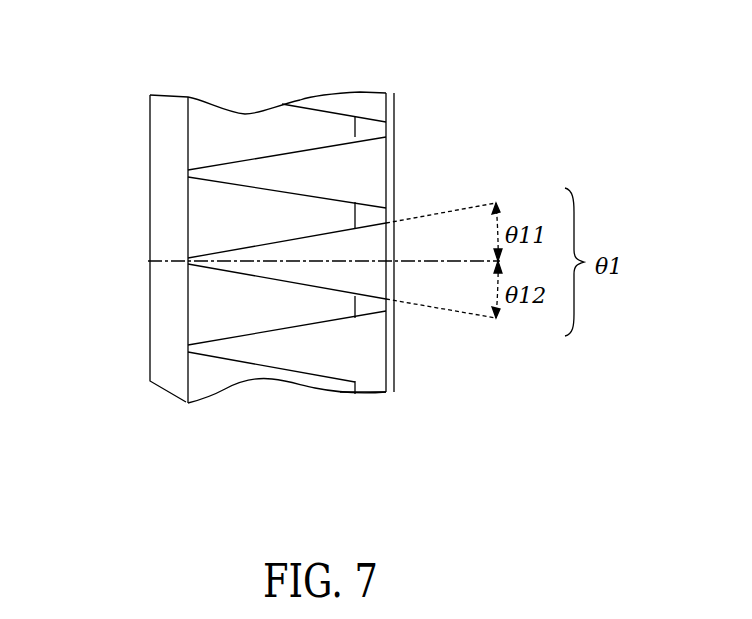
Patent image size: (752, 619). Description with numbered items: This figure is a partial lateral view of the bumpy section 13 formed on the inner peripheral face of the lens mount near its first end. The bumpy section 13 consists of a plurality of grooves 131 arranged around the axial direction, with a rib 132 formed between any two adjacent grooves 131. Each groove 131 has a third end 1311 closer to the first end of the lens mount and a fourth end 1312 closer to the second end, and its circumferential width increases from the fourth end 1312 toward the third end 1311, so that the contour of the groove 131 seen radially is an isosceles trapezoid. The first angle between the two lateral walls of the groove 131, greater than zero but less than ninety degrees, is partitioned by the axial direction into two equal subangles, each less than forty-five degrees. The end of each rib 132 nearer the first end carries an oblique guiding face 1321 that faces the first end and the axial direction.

The bumpy section 13 is at (208, 142).
The groove 131 is at (360, 242).
The third end 1311 is at (360, 362).
The fourth end 1312 is at (208, 352).
The rib 132 is at (246, 215).
The guiding face 1321 is at (365, 312).